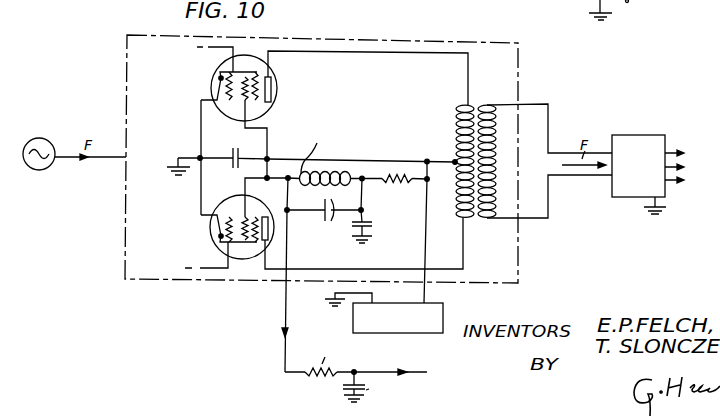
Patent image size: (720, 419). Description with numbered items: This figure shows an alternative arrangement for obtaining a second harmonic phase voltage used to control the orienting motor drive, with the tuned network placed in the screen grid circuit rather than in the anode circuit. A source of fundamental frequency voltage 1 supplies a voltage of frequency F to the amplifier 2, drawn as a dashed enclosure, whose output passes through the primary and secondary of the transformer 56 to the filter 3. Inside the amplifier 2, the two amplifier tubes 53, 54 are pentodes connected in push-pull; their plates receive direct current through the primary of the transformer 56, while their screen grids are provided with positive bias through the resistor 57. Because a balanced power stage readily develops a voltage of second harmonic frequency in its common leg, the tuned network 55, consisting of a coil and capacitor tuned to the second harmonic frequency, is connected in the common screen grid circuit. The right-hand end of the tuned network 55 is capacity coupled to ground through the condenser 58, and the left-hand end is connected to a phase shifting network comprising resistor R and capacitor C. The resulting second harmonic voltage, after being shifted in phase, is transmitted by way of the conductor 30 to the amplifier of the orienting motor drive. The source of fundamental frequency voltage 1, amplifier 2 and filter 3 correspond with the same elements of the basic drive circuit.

The source of fundamental frequency voltage 1 is at (43, 142).
The amplifier 2 is at (518, 64).
The filter 3 is at (654, 135).
The conductor 30 is at (427, 374).
The amplifier tube 53 is at (218, 64).
The amplifier tube 54 is at (213, 243).
The tuned network 55 is at (336, 217).
The transformer 56 is at (475, 221).
The resistor 57 is at (400, 185).
The condenser 58 is at (374, 226).